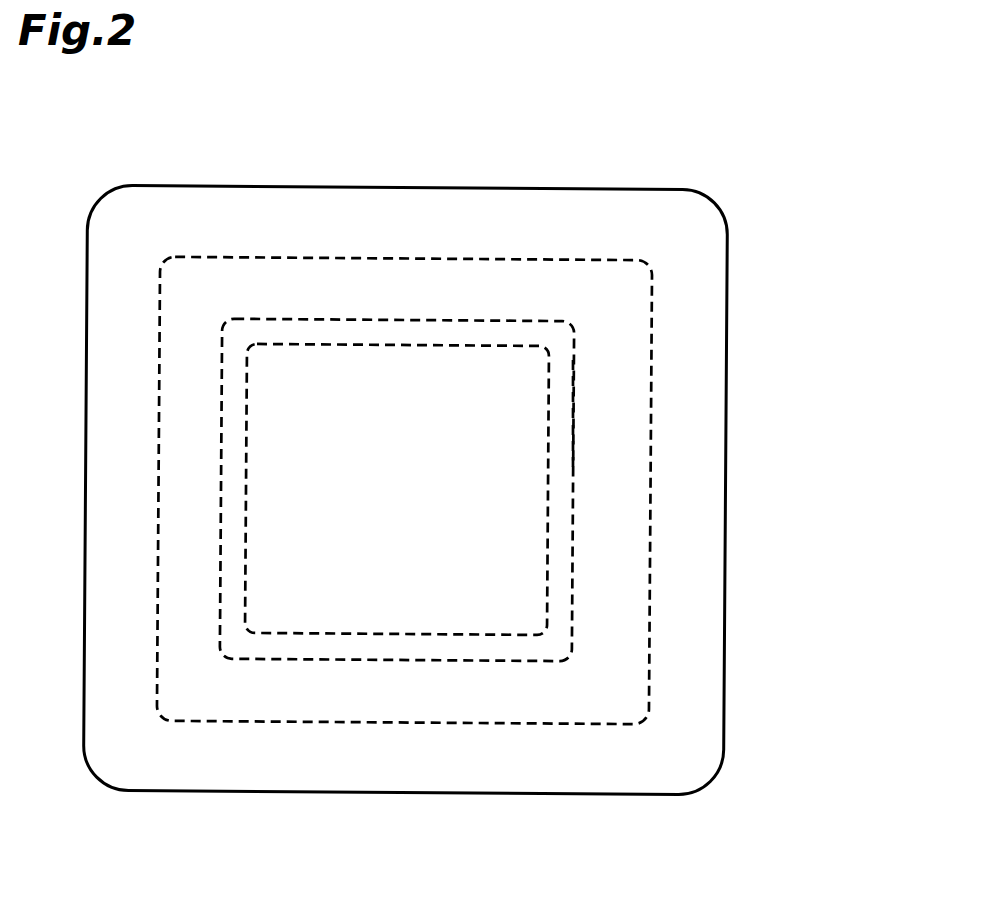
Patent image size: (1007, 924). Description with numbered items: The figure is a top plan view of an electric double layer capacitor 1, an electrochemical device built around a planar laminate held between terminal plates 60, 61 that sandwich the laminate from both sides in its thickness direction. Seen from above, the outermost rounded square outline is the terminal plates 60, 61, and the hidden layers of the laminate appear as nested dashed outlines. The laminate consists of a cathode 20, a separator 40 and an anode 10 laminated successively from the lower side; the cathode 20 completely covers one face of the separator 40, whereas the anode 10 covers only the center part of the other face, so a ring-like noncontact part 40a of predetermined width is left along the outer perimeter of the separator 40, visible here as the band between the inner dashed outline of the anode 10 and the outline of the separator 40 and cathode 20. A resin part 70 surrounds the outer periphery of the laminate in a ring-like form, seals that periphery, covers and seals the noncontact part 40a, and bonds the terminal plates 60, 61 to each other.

The electric double layer capacitor 1 is at (692, 117).
The anode 10 is at (363, 344).
The cathode 20 is at (540, 320).
The separator 40 is at (412, 398).
The noncontact part 40a is at (563, 382).
The terminal plate 60 is at (477, 490).
The terminal plate 61 is at (725, 262).
The resin part 70 is at (575, 430).